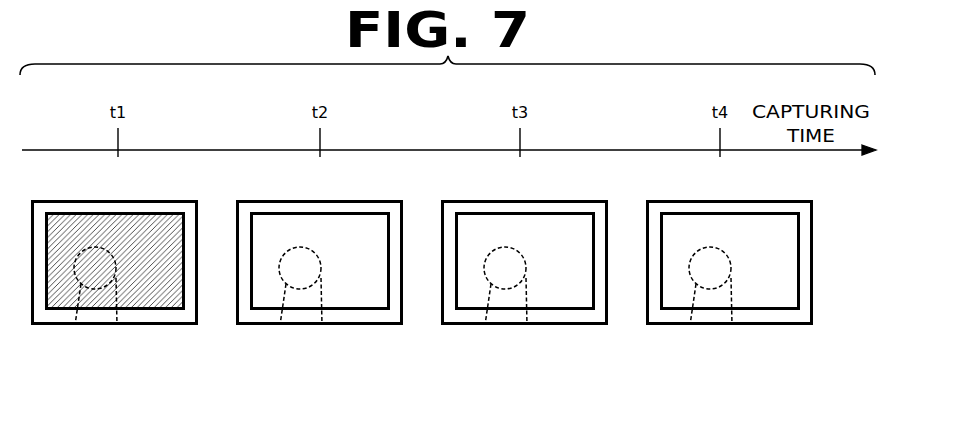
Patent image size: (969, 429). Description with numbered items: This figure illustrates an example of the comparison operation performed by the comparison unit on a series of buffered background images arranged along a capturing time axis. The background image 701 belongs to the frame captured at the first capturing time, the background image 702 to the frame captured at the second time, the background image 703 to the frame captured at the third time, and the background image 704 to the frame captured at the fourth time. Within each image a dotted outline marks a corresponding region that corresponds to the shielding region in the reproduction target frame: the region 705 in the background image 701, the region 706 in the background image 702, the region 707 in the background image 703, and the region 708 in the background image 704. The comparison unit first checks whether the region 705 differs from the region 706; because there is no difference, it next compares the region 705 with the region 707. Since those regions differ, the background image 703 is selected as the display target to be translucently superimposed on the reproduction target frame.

The background image 701 is at (52, 325).
The background image 702 is at (257, 325).
The background image 703 is at (462, 325).
The background image 704 is at (667, 325).
The region 705 is at (115, 252).
The region 706 is at (320, 252).
The region 707 is at (525, 252).
The region 708 is at (730, 252).